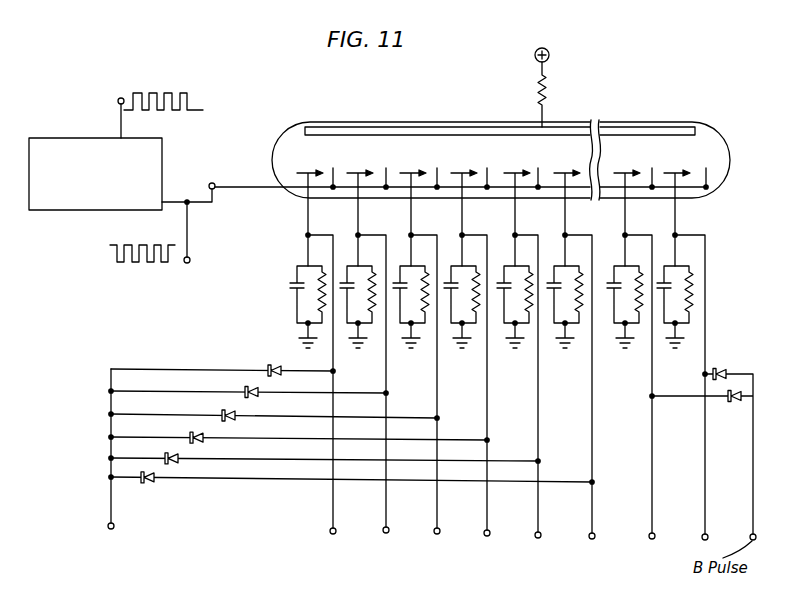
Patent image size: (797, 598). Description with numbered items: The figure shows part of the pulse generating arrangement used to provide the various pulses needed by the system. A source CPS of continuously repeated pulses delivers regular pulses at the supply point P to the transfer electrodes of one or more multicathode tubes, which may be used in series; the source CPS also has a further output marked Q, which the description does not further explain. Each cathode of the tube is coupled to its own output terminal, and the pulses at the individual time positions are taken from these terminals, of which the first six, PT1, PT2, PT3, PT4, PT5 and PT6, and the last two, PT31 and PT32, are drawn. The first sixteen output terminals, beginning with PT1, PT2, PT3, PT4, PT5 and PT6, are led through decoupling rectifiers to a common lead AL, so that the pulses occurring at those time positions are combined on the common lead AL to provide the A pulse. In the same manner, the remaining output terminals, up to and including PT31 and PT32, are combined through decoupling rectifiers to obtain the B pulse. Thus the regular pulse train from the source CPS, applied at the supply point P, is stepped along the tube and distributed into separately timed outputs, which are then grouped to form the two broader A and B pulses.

The source of continuously repeated pulses CPS is at (73, 200).
The Q output terminal of clock pulse source Q is at (139, 106).
The supply point P is at (382, 231).
The common lead AL is at (345, 455).
The output terminal PT1 is at (317, 362).
The output terminal PT2 is at (370, 362).
The output terminal PT3 is at (422, 362).
The output terminal PT4 is at (473, 363).
The output terminal PT5 is at (526, 363).
The output terminal PT6 is at (577, 363).
The output terminal PT31 is at (636, 363).
The output terminal PT32 is at (688, 363).